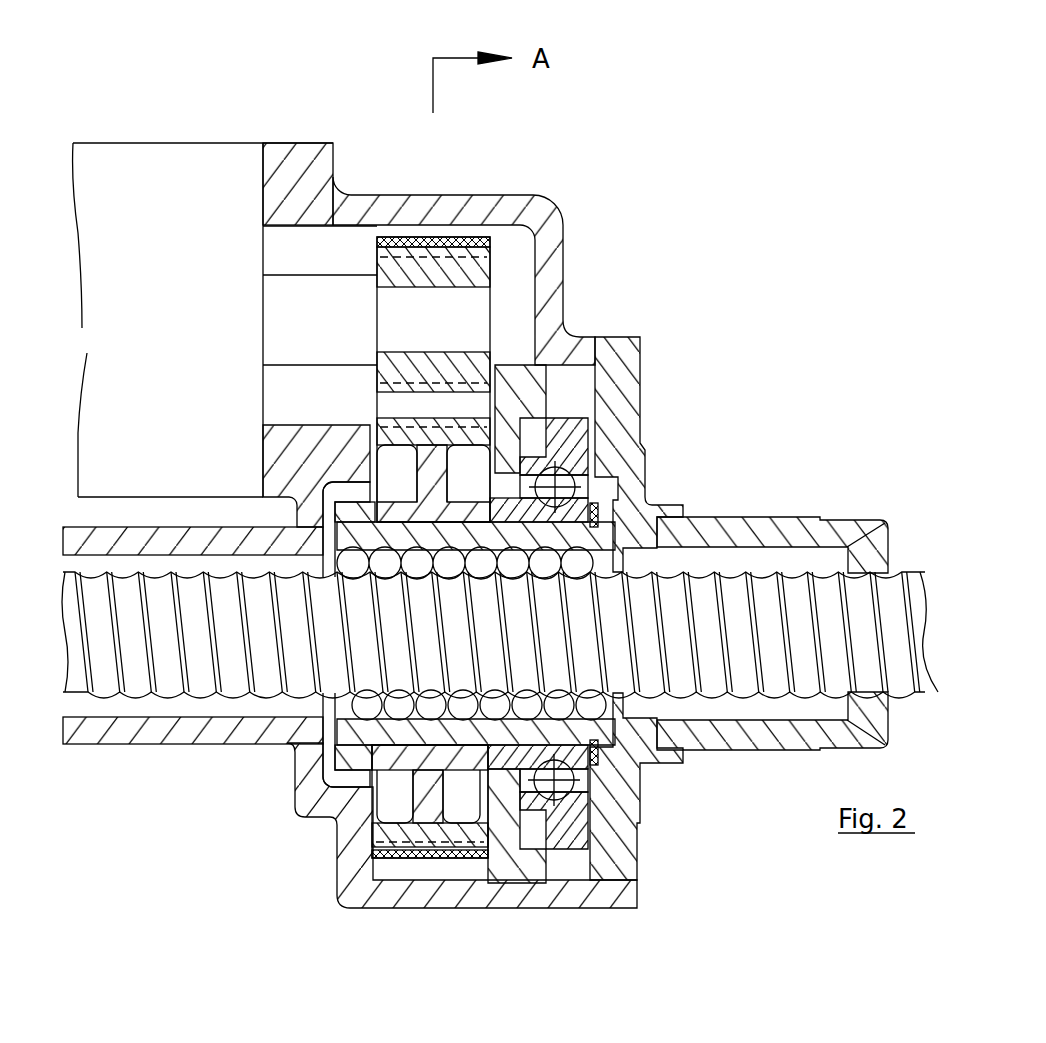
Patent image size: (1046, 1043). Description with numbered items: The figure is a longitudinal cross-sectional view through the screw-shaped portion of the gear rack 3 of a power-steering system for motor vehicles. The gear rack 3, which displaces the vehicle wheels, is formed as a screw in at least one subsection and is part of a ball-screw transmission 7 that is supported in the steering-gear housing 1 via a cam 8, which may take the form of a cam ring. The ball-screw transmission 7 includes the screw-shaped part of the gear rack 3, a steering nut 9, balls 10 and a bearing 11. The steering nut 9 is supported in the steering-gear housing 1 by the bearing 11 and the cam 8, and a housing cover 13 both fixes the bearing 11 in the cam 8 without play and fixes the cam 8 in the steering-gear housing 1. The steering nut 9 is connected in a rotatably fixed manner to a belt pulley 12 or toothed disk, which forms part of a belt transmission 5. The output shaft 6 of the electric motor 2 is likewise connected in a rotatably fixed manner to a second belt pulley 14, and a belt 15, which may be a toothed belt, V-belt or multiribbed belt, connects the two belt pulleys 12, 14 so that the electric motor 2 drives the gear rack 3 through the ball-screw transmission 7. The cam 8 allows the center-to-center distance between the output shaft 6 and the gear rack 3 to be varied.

The steering-gear housing 1 is at (390, 890).
The electric motor 2 is at (150, 188).
The gear rack 3 is at (167, 667).
The belt transmission 5 is at (397, 227).
The output shaft 6 is at (308, 308).
The ball-screw transmission 7 is at (327, 745).
The cam 8 is at (517, 860).
The steering nut 9 is at (355, 753).
The balls 10 is at (598, 783).
The bearing 11 is at (573, 803).
The belt pulley 12 is at (427, 452).
The housing cover 13 is at (767, 733).
The belt pulley 14 is at (473, 277).
The belt 15 is at (453, 242).